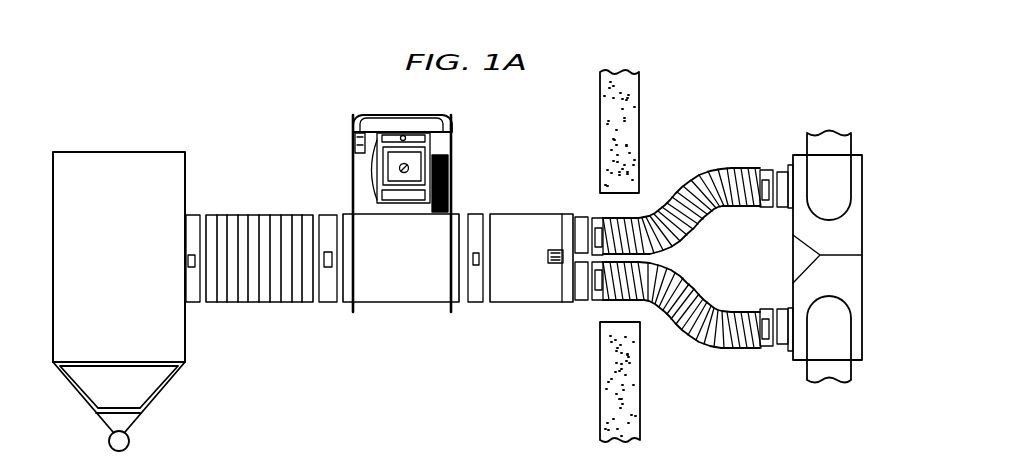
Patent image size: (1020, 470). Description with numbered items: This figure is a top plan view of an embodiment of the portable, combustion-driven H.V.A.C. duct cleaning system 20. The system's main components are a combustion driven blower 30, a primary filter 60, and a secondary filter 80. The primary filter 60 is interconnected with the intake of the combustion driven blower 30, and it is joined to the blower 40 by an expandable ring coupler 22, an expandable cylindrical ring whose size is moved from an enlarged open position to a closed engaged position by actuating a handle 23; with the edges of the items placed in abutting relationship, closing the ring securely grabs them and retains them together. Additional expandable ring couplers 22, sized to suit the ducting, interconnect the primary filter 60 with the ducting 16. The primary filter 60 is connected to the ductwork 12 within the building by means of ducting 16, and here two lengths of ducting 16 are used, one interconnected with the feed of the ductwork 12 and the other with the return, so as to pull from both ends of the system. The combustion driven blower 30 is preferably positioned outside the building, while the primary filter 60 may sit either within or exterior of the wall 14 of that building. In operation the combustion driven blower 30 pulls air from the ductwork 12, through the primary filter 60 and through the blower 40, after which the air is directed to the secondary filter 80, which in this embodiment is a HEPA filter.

The ductwork 12 is at (863, 231).
The wall 14 is at (640, 129).
The ducting 16 is at (262, 303).
The H.V.A.C. duct cleaning system 20 is at (403, 215).
The expandable ring coupler 22 is at (191, 253).
The handle 23 is at (477, 274).
The combustion driven blower 30 is at (459, 141).
The blower 40 is at (402, 303).
The primary filter 60 is at (523, 321).
The secondary filter 80 is at (206, 377).